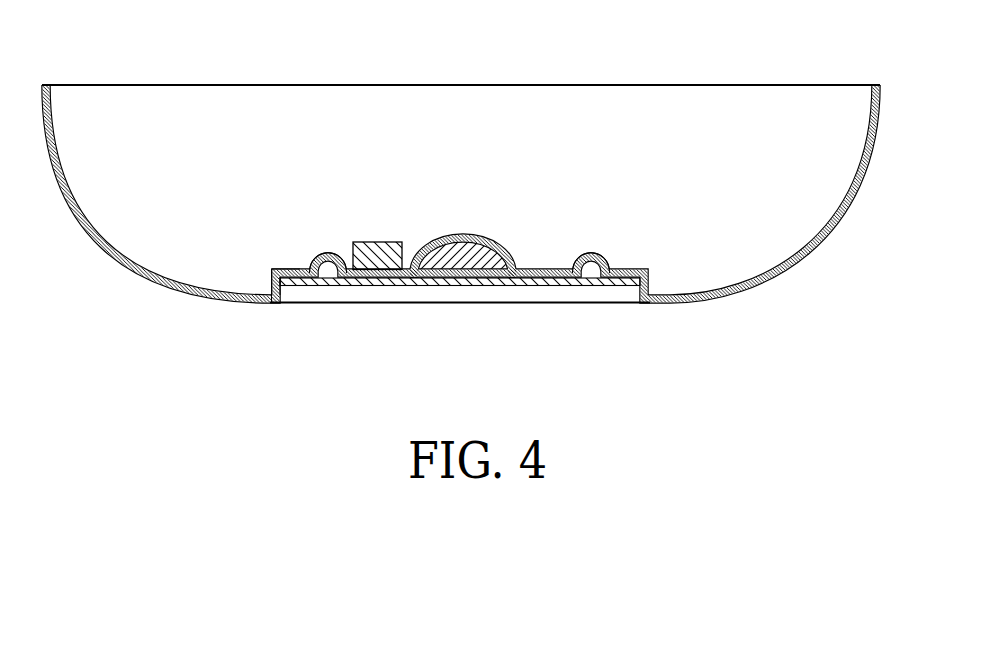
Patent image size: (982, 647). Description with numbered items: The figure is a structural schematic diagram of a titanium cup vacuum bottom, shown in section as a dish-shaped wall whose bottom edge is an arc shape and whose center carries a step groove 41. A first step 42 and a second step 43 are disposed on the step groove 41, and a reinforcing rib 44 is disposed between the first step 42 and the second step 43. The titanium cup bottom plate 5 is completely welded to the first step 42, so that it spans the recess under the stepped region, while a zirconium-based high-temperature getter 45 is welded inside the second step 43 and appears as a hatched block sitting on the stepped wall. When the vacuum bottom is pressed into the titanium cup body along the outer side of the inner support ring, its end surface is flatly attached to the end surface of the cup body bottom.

The titanium cup bottom plate 5 is at (459, 278).
The step groove 41 is at (487, 292).
The first step 42 is at (298, 269).
The second step 43 is at (540, 270).
The reinforcing rib 44 is at (320, 253).
The zirconium-based high-temperature getter 45 is at (378, 243).